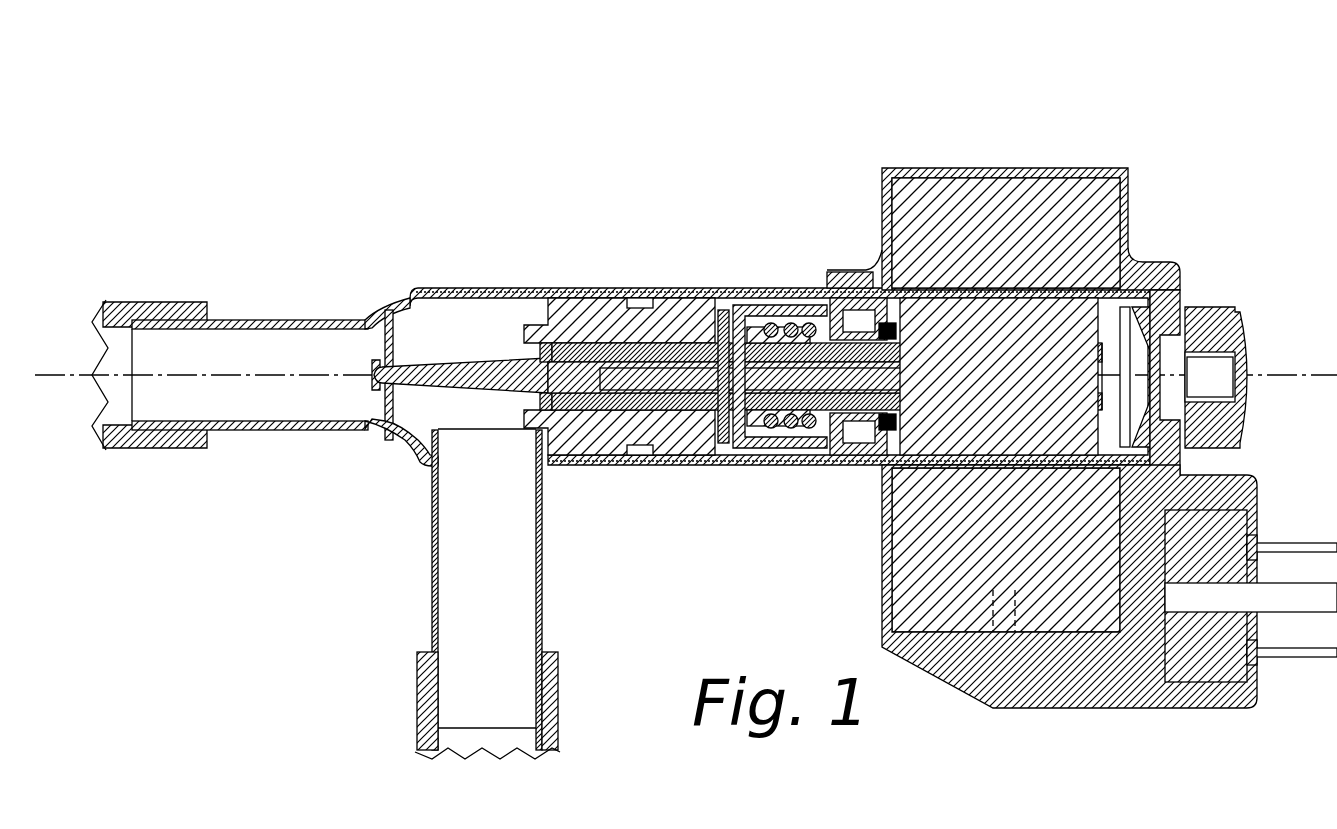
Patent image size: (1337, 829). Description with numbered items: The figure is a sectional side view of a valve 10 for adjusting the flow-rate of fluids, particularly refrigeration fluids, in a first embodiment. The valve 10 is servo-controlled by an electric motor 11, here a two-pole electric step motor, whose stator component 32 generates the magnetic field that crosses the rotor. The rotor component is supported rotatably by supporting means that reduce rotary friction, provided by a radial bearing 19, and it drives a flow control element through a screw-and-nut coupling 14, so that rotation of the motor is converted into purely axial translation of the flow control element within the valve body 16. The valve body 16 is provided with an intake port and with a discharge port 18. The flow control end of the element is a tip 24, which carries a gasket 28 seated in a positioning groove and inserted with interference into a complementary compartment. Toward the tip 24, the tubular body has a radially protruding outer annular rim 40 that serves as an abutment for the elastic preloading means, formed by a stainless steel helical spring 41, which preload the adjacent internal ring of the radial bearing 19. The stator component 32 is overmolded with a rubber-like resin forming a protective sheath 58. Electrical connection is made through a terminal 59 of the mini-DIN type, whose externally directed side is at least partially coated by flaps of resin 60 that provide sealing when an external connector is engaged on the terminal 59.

The valve 10 is at (652, 215).
The electric motor 11 is at (995, 160).
The screw-and-nut coupling 14 is at (372, 362).
The valve body 16 is at (503, 281).
The discharge port 18 is at (475, 480).
The radial bearing 19 is at (856, 282).
The tip 24 is at (458, 365).
The gasket 28 is at (550, 408).
The stator component 32 is at (905, 568).
The outer annular rim 40 is at (745, 292).
The helical spring 41 is at (778, 322).
The protective sheath 58 is at (1147, 256).
The terminal 59 is at (1240, 477).
The flaps of resin 60 is at (1268, 512).